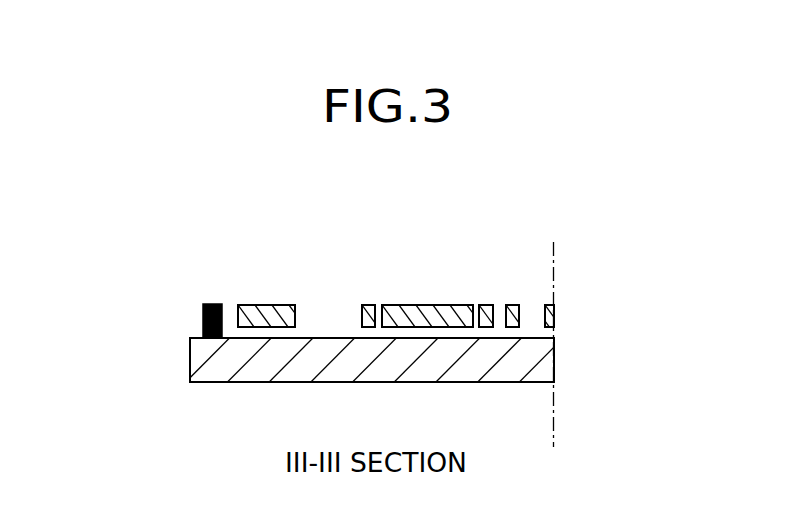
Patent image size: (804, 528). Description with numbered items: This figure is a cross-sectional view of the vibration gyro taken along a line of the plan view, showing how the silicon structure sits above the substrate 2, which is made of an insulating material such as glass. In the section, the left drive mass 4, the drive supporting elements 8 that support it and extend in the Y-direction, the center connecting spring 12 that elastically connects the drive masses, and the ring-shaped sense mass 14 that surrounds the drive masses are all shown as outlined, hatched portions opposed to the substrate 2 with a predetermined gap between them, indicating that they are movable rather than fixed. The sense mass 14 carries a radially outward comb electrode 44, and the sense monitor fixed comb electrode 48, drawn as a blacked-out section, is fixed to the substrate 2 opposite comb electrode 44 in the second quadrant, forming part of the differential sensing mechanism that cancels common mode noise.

The substrate 2 is at (228, 363).
The drive mass 4 is at (428, 305).
The drive supporting element 8 is at (372, 305).
The center connecting spring 12 is at (550, 305).
The sense mass 14 is at (288, 263).
The comb electrode 44 is at (281, 305).
The sense monitor fixed comb electrode 48 is at (211, 304).